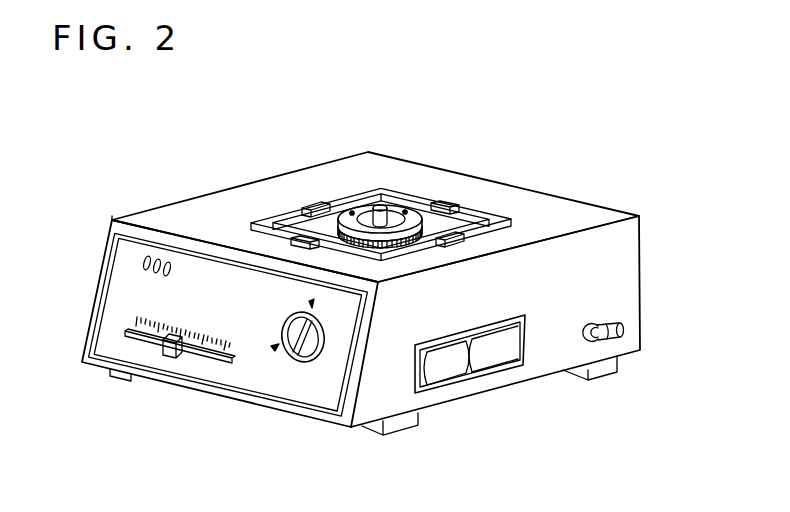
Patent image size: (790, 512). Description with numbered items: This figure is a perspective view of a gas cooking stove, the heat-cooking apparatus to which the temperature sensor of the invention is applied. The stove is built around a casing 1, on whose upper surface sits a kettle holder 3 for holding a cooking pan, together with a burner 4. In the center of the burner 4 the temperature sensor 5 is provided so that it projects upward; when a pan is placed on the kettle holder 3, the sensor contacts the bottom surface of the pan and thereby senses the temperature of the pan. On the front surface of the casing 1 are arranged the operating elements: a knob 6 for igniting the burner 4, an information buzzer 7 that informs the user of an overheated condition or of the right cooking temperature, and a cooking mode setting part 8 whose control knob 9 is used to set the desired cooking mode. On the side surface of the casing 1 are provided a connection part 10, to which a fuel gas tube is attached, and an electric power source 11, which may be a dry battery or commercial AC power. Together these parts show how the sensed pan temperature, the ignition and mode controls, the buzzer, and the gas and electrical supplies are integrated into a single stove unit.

The casing 1 is at (641, 251).
The kettle holder 3 is at (497, 215).
The burner 4 is at (400, 208).
The temperature sensor 5 is at (378, 207).
The knob 6 is at (291, 357).
The information buzzer 7 is at (142, 265).
The cooking mode setting part 8 is at (193, 360).
The control knob 9 is at (163, 352).
The connection part 10 is at (611, 344).
The electric power source 11 is at (494, 357).